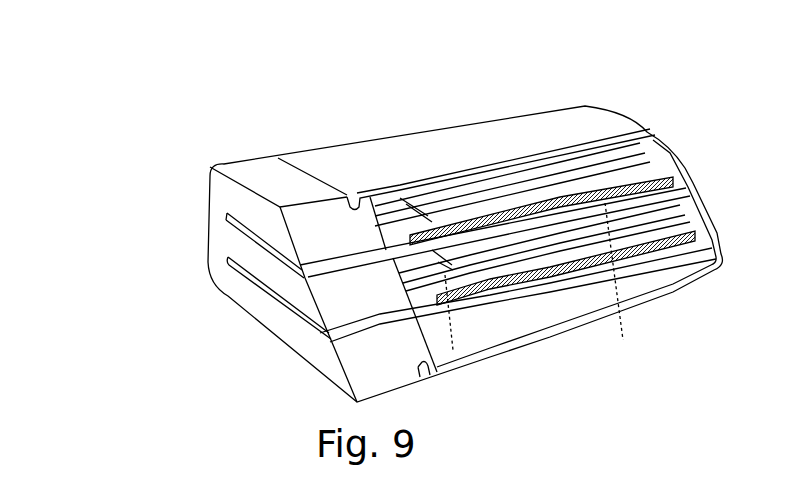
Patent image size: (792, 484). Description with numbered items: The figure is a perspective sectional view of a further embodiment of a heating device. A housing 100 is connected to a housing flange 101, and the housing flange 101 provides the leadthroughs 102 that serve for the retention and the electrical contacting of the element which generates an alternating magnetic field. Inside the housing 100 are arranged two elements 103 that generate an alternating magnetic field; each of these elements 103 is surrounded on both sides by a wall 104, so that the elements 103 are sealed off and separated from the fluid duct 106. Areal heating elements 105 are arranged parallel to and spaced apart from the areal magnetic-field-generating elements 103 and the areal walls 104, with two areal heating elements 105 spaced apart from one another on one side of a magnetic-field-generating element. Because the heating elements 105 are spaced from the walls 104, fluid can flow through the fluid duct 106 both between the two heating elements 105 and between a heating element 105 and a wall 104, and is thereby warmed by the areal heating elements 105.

The housing 100 is at (612, 117).
The housing flange 101 is at (250, 175).
The leadthroughs 102 is at (266, 248).
The magnetic-field-generating elements 103 is at (608, 205).
The wall 104 is at (663, 174).
The areal heating elements 105 is at (409, 227).
The fluid duct 106 is at (712, 257).